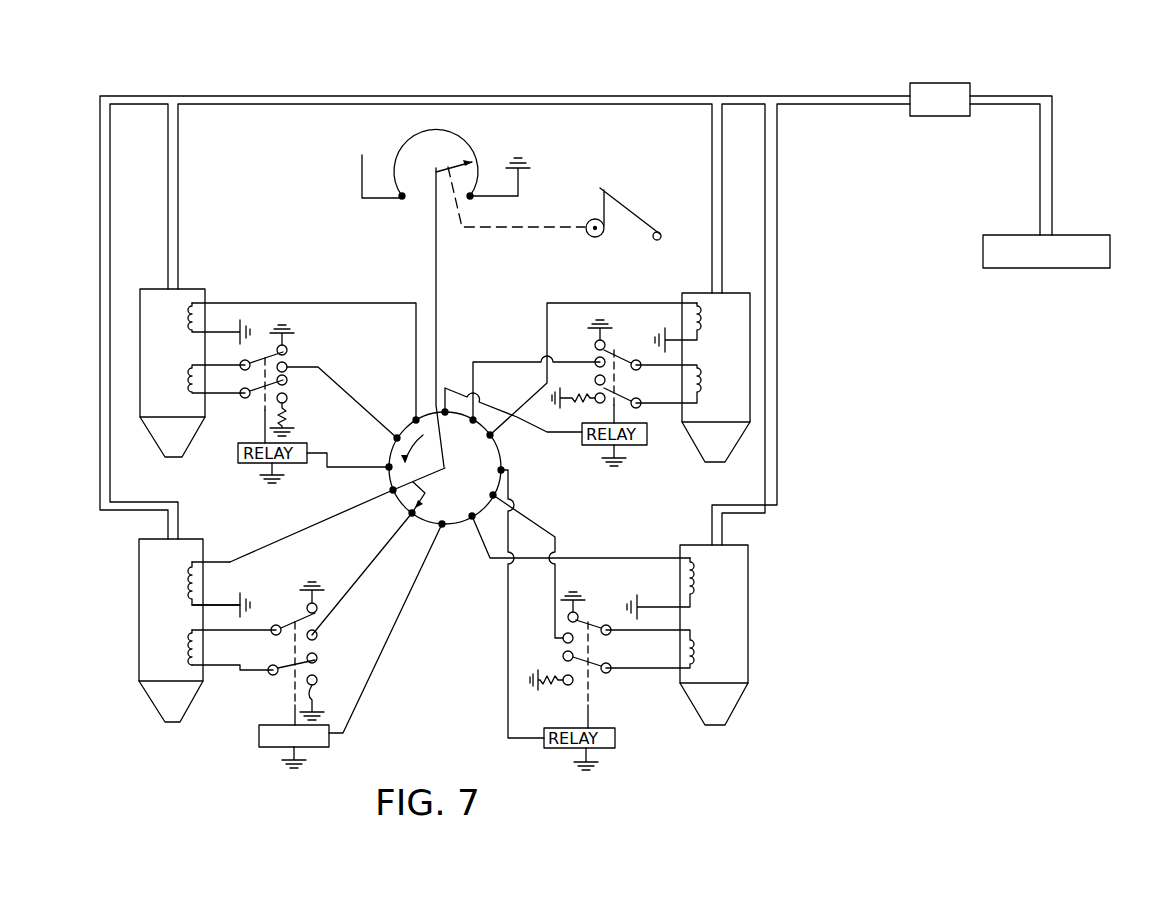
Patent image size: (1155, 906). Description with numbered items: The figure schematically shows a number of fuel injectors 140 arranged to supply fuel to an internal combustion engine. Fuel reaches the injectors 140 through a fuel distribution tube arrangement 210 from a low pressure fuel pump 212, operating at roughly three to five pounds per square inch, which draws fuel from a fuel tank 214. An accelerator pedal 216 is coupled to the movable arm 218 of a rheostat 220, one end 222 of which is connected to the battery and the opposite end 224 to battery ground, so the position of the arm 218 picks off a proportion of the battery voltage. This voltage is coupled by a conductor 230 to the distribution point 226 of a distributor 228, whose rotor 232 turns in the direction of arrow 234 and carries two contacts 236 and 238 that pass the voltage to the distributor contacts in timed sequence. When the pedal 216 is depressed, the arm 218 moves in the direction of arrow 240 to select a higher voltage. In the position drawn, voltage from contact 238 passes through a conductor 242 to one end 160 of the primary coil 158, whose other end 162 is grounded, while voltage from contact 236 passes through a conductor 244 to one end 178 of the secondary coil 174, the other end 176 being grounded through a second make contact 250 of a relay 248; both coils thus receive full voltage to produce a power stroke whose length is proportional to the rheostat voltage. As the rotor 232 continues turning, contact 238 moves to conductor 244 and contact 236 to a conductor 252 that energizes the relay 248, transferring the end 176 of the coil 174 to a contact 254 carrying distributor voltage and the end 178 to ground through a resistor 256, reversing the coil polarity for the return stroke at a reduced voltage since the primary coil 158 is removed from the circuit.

The fuel injector 140 is at (196, 272).
The primary coil 158 is at (190, 325).
The one end of primary coil 160 is at (218, 560).
The other end of primary coil 162 is at (228, 600).
The secondary coil 174 is at (190, 380).
The other end of secondary coil 176 is at (216, 630).
The one end of secondary coil 178 is at (216, 672).
The fuel distribution tube arrangement 210 is at (658, 96).
The low pressure fuel pump 212 is at (957, 83).
The fuel tank 214 is at (1075, 235).
The accelerator pedal 216 is at (625, 193).
The movable arm 218 is at (446, 170).
The rheostat 220 is at (490, 136).
The one end of rheostat 222 is at (402, 199).
The opposite end of rheostat 224 is at (470, 199).
The distribution point 226 is at (446, 468).
The distributor 228 is at (453, 353).
The conductor 230 is at (436, 275).
The rotor 232 is at (438, 478).
The arrow 234 is at (397, 438).
The rotor contact 236 is at (408, 514).
The rotor contact 238 is at (392, 490).
The arrow 240 is at (392, 124).
The conductor 242 is at (305, 529).
The conductor 244 is at (355, 583).
The relay 248 is at (330, 748).
The second make contact 250 is at (307, 608).
The conductor 252 is at (410, 598).
The contact 254 is at (317, 635).
The resistor 256 is at (317, 680).